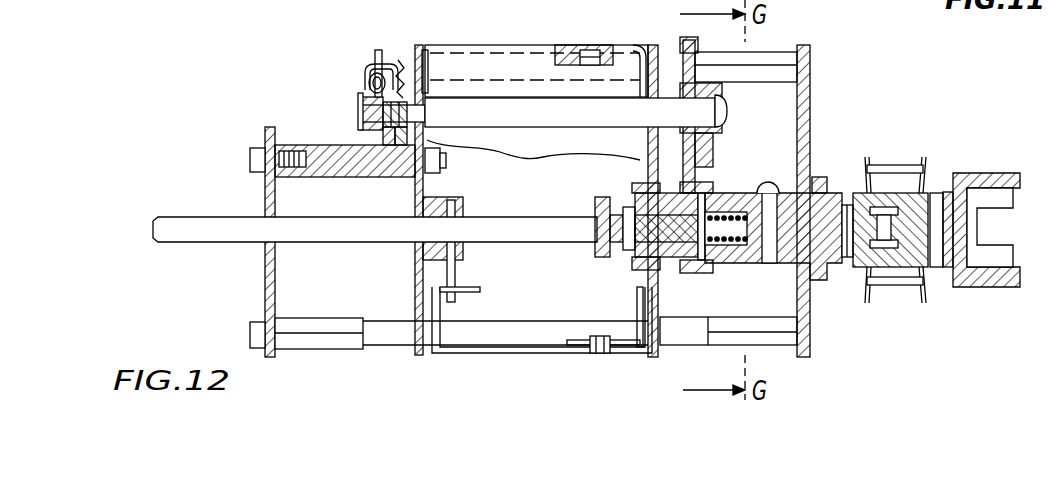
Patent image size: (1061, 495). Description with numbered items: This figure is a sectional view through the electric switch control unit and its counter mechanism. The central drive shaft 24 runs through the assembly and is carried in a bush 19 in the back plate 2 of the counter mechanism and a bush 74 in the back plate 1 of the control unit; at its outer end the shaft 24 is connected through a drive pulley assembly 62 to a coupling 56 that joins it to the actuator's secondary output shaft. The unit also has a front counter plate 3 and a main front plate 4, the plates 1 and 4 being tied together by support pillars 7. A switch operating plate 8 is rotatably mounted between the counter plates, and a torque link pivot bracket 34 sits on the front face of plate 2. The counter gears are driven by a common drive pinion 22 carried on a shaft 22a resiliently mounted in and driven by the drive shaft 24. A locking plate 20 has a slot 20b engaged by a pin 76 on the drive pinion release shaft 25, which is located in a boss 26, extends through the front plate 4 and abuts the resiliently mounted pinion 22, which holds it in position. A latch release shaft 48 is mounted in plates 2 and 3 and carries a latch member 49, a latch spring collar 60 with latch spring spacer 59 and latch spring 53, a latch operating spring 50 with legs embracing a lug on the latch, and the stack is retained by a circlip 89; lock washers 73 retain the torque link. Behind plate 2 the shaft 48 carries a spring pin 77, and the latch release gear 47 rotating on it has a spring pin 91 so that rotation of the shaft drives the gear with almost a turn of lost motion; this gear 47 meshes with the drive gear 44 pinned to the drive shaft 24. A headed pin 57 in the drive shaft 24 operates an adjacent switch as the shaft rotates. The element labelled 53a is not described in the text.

The back plate of the control unit 1 is at (803, 100).
The back plate of the counter mechanism 2 is at (653, 360).
The front counter plate 3 is at (420, 353).
The main front plate 4 is at (265, 138).
The support pillars 7 is at (327, 150).
The switch operating plate 8 is at (503, 57).
The bush 19 is at (635, 192).
The locking plate 20 is at (535, 356).
The slot 20b is at (467, 292).
The drive pinion 22 is at (603, 255).
The shaft 22a is at (670, 240).
The central drive shaft 24 is at (817, 230).
The drive pinion release shaft 25 is at (233, 227).
The boss 26 is at (410, 250).
The torque link pivot bracket 34 is at (568, 45).
The drive gear 44 is at (707, 275).
The latch release gear 47 is at (692, 173).
The latch release shaft 48 is at (543, 145).
The latch member 49 is at (368, 80).
The latch operating spring 50 is at (380, 52).
The latch spring 53 is at (405, 58).
The clip 53a is at (362, 65).
The coupling 56 is at (977, 177).
The headed pin 57 is at (767, 182).
The latch spring spacer 59 is at (374, 135).
The latch spring collar 60 is at (400, 145).
The drive pulley assembly 62 is at (890, 172).
The lock washers 73 is at (362, 94).
The bush 74 is at (818, 182).
The pin 76 is at (455, 277).
The spring pin 77 is at (677, 138).
The circlip 89 is at (433, 93).
The spring pin 91 is at (693, 63).